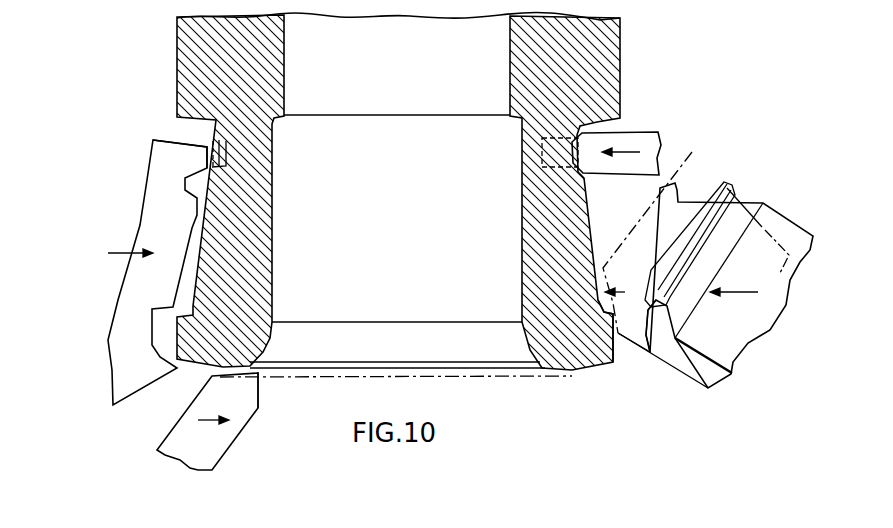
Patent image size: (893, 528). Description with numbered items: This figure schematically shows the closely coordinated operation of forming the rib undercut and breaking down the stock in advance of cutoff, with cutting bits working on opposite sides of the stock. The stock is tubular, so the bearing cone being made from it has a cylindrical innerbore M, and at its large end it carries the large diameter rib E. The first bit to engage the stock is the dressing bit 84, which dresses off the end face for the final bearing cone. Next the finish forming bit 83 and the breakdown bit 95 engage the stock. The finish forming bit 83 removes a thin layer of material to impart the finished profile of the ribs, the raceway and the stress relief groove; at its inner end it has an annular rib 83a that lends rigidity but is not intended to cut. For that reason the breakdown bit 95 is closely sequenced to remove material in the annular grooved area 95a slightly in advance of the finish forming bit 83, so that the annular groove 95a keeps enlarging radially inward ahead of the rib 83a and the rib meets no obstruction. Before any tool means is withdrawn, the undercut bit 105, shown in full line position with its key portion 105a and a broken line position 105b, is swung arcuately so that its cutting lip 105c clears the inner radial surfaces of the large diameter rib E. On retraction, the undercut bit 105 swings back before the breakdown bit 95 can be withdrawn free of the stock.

The innerbore M is at (520, 216).
The large diameter rib E is at (598, 358).
The finish forming bit 83 is at (127, 300).
The annular rib 83a is at (192, 155).
The dressing bit 84 is at (222, 443).
The breakdown bit 95 is at (640, 133).
The annular grooved area 95a is at (217, 140).
The undercut bit 105 is at (745, 208).
The key strip of side insert 105a is at (726, 182).
The displaced position line 105b is at (692, 163).
The cutting lip 105c is at (653, 352).